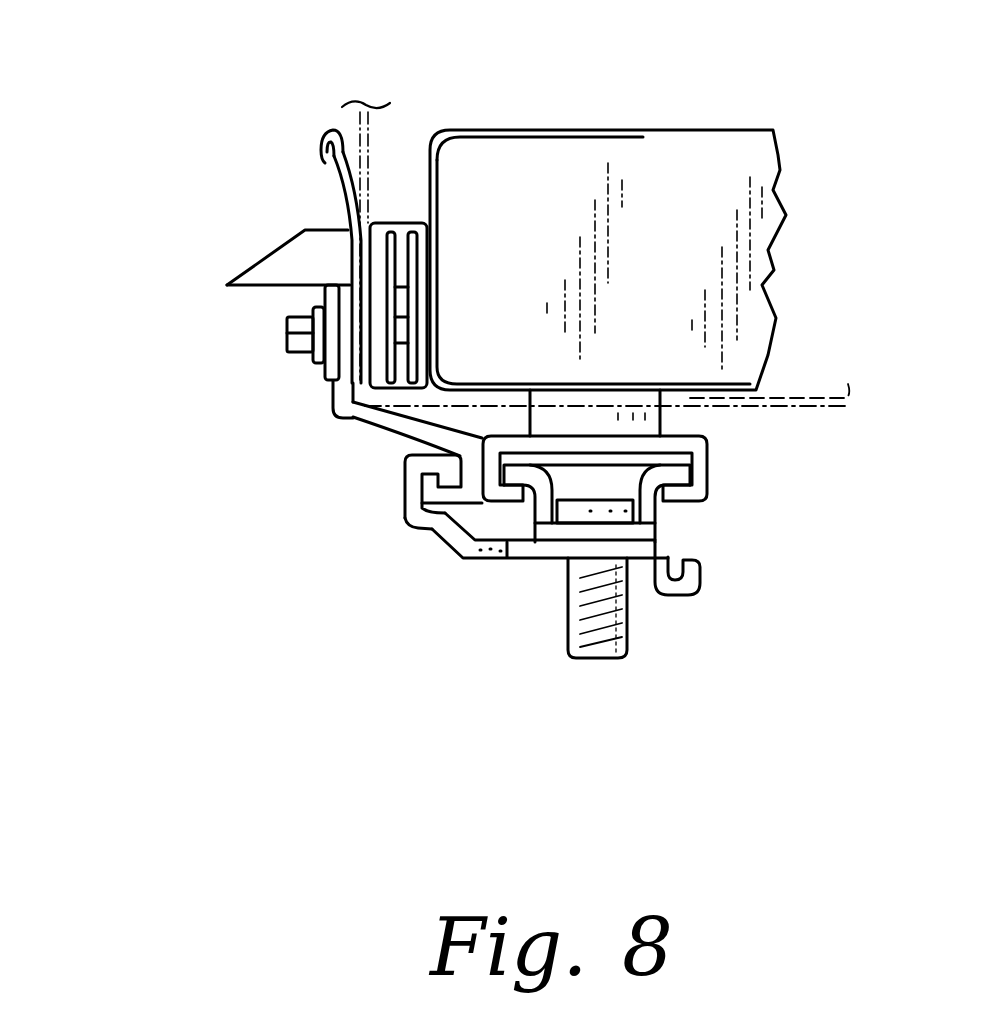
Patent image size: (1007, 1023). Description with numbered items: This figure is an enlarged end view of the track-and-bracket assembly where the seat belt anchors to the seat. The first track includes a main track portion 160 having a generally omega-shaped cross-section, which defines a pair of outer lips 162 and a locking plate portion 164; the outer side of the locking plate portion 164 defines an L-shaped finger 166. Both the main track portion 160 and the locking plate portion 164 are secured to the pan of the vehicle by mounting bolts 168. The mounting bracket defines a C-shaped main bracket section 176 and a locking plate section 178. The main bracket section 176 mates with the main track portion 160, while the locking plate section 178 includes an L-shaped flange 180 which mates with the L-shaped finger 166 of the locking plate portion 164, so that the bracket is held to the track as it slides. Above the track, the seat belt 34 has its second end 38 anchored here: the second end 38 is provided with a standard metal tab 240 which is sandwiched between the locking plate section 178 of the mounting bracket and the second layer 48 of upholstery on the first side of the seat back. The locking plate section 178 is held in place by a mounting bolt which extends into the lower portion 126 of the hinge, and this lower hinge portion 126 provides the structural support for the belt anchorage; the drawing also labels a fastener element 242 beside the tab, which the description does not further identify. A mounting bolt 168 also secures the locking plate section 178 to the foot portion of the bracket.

The seat belt 34 is at (342, 174).
The second end of the seat belt 38 is at (340, 420).
The first side of the seat back 48 is at (370, 136).
The lower hinge portion 126 is at (455, 322).
The main track portion 160 is at (660, 525).
The outer lips 162 is at (512, 474).
The locking plate portion 164 is at (532, 497).
The L-shaped finger 166 is at (403, 453).
The mounting bolts 168 is at (627, 630).
The C-shaped main bracket section 176 is at (600, 438).
The locking plate section 178 is at (333, 384).
The L-shaped flange 180 is at (436, 536).
The metal tab 240 is at (348, 258).
The nut 242 is at (287, 331).